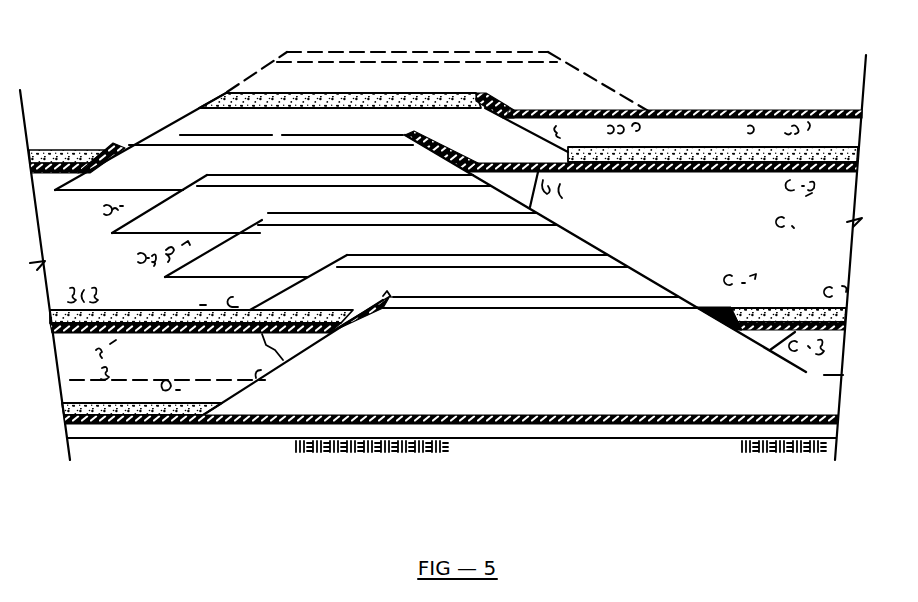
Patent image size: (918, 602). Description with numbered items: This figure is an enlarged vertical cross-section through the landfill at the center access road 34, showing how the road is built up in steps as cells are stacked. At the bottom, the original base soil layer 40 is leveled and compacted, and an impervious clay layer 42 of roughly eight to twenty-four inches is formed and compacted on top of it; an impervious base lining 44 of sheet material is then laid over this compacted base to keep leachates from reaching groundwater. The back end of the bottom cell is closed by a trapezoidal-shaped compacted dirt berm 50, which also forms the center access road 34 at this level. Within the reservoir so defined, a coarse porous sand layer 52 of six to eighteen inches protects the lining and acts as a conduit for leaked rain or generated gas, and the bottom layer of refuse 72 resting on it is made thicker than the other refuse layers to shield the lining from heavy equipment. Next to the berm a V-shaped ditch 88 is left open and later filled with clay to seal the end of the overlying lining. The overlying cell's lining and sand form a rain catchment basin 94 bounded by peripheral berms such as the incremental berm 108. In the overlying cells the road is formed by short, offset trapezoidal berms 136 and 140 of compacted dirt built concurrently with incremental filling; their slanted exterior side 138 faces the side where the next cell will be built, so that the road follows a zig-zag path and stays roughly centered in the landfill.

The center access road 34 is at (448, 135).
The base soil layer 40 is at (372, 458).
The impervious clay layer 42 is at (465, 430).
The impervious base lining 44 is at (560, 425).
The trapezoidal-shaped compacted dirt berm 50 is at (672, 382).
The coarse porous sand layer 52 is at (118, 418).
The bottom layer of refuse 72 is at (215, 388).
The V-shaped ditch 88 is at (737, 333).
The rain catchment basin 94 is at (68, 148).
The incremental berm 108 is at (550, 242).
The offset trapezoidal berm 136 is at (163, 163).
The slanted exterior side 138 is at (242, 120).
The offset trapezoidal berm 140 is at (637, 272).